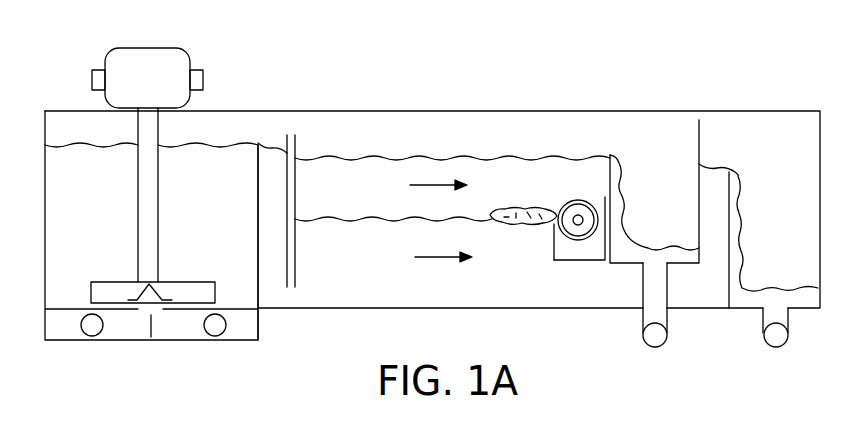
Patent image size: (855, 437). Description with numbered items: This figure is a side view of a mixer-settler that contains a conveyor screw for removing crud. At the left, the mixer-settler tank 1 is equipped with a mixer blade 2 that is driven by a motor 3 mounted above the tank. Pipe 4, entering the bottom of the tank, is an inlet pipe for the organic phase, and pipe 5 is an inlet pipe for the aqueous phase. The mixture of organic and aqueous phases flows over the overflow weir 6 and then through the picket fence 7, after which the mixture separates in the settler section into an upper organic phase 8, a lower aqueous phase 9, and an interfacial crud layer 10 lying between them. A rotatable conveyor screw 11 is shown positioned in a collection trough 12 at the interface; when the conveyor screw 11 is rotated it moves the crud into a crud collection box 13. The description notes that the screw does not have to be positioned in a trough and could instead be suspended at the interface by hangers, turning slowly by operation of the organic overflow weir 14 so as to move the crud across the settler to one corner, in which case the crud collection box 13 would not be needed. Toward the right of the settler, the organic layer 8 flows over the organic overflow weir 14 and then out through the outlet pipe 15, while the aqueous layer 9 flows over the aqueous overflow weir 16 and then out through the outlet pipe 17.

The mixer-settler tank 1 is at (45, 224).
The mixer blade 2 is at (105, 282).
The motor 3 is at (137, 48).
The inlet pipe for the organic phase 4 is at (92, 336).
The inlet pipe for the aqueous phase 5 is at (214, 336).
The overflow weir 6 is at (258, 226).
The picket fence 7 is at (287, 178).
The upper organic phase 8 is at (375, 158).
The lower aqueous phase 9 is at (319, 296).
The interfacial crud layer 10 is at (523, 210).
The rotatable conveyor screw 11 is at (571, 203).
The collection trough 12 is at (558, 238).
The crud collection box 13 is at (587, 262).
The organic overflow weir 14 is at (616, 172).
The outlet pipe 15 is at (668, 322).
The aqueous overflow weir 16 is at (731, 190).
The outlet pipe 17 is at (790, 322).